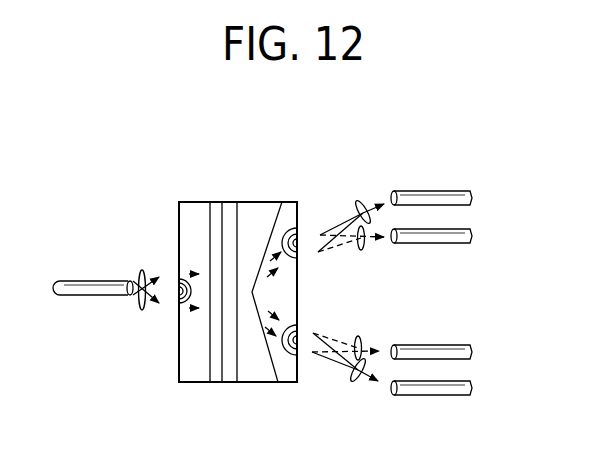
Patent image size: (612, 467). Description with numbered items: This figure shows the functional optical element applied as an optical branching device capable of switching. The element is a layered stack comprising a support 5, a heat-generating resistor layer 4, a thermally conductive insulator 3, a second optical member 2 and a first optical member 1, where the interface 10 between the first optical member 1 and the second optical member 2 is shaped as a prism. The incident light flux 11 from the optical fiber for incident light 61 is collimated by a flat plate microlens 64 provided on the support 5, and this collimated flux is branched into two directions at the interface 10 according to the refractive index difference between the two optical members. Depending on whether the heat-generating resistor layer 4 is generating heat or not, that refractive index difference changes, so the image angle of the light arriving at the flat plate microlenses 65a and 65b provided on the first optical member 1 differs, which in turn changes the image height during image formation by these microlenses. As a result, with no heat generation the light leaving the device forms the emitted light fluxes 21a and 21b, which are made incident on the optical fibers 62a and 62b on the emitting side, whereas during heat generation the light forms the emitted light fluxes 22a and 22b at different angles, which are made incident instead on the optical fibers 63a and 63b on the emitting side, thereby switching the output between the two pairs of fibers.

The first optical member 1 is at (287, 213).
The second optical member 2 is at (258, 213).
The insulator having thermal conductivity 3 is at (230, 213).
The heat-generating resistor layer 4 is at (219, 213).
The support 5 is at (192, 213).
The interface 10 is at (252, 293).
The incident light flux 11 is at (143, 311).
The emitted light flux 21a is at (363, 251).
The emitted light flux 21b is at (360, 336).
The emitted light flux 22a is at (364, 201).
The emitted light flux 22b is at (356, 383).
The optical fiber for incident light 61 is at (92, 296).
The optical fiber on the emitting side 62a is at (450, 244).
The optical fiber on the emitting side 62b is at (442, 345).
The optical fiber on the emitting side 63a is at (435, 191).
The optical fiber on the emitting side 63b is at (437, 396).
The flat plate microlens 64 is at (178, 283).
The flat plate microlens 65a is at (301, 234).
The flat plate microlens 65b is at (301, 358).